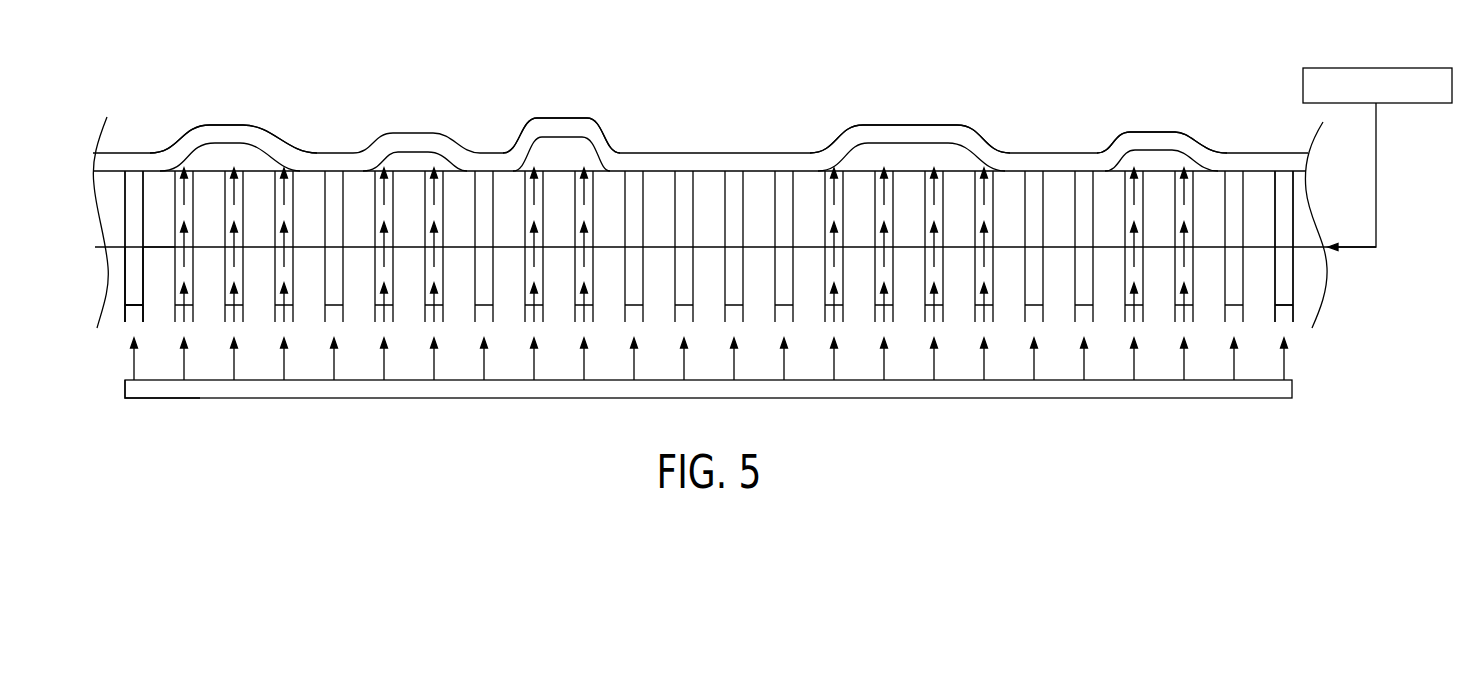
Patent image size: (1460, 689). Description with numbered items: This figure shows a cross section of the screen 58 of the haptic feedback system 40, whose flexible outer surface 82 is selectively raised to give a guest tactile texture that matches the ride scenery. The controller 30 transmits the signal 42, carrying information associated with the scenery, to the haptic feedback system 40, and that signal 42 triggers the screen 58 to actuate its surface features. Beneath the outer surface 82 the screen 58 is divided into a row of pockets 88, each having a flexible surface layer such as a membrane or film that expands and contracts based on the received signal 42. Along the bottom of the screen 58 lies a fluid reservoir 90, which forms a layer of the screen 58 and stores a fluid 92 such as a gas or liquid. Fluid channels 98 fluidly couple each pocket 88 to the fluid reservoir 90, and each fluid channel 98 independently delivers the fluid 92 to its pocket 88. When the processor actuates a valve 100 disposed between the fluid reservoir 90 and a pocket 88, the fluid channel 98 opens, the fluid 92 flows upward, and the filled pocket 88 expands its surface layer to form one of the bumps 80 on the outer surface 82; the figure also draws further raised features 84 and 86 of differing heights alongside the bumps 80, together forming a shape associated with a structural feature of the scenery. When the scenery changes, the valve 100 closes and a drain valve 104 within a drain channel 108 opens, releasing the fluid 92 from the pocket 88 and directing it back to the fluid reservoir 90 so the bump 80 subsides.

The controller 30 is at (1340, 68).
The haptic feedback system 40 is at (131, 417).
The signal 42 is at (1378, 172).
The screen 58 is at (1297, 235).
The bumps 80 is at (900, 125).
The outer surface 82 is at (706, 153).
The raised feature 84 is at (615, 128).
The raised feature 86 is at (1097, 132).
The pockets 88 is at (134, 190).
The fluid reservoir 90 is at (1293, 388).
The fluid 92 is at (1132, 363).
The fluid channels 98 is at (1290, 285).
The valve 100 is at (133, 305).
The drain valve 104 is at (158, 250).
The drain channel 108 is at (200, 194).